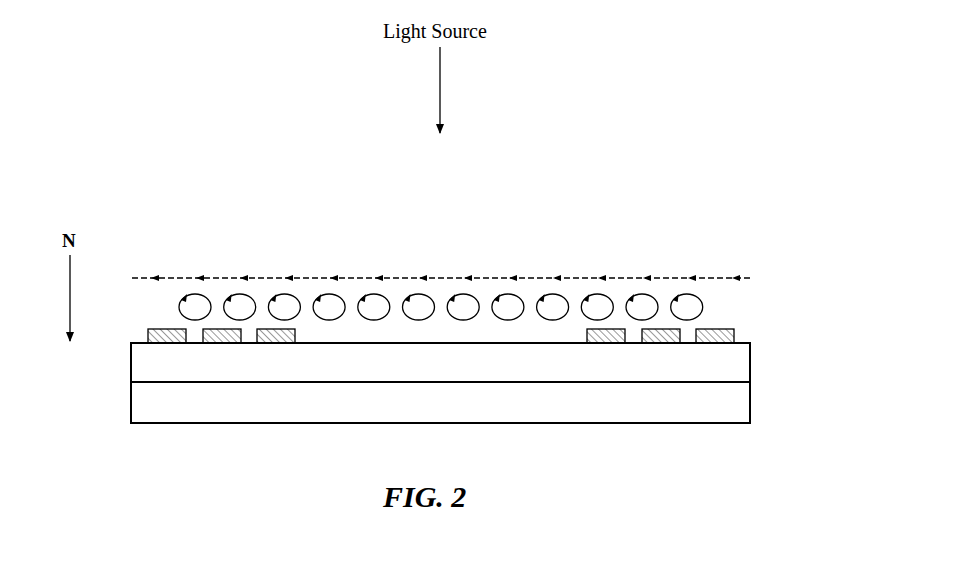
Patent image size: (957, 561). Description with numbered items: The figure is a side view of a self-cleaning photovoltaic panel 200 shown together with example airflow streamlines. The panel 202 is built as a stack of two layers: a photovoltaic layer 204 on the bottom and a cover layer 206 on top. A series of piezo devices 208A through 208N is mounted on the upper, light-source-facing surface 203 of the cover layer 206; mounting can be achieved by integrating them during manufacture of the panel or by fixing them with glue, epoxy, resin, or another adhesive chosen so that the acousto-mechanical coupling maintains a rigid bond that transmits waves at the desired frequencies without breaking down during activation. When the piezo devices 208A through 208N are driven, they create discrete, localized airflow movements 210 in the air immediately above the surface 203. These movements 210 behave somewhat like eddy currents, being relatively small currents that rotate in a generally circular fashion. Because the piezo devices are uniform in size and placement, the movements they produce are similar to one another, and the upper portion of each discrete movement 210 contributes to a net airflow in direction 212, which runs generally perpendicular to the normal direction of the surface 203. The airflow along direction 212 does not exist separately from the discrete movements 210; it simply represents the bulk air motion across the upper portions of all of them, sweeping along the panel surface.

The self-cleaning photovoltaic panel 200 is at (209, 168).
The panel 202 is at (770, 343).
The upper surface 203 is at (484, 343).
The photovoltaic layer 204 is at (170, 405).
The cover layer 206 is at (148, 360).
The piezo device 208A is at (165, 329).
The piezo device 208N is at (718, 329).
The discrete localized airflow movements 210 is at (194, 302).
The net airflow direction 212 is at (303, 279).